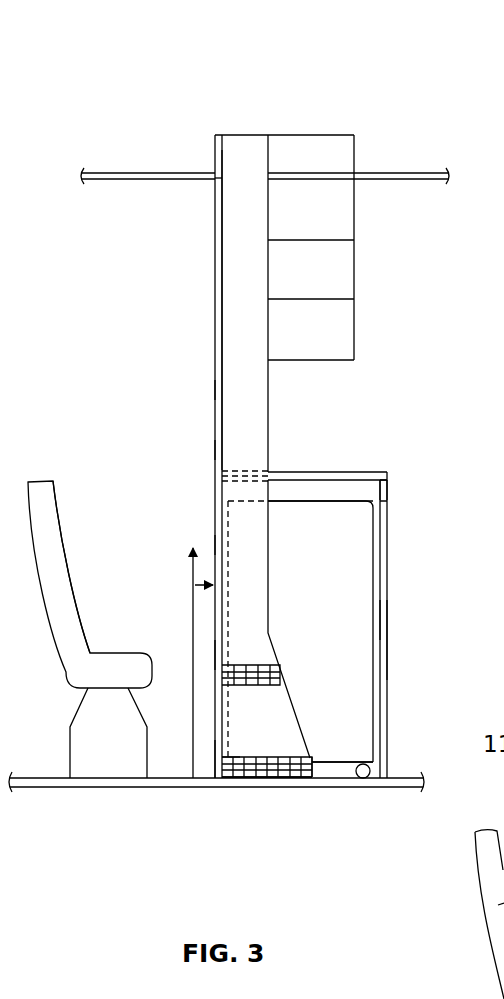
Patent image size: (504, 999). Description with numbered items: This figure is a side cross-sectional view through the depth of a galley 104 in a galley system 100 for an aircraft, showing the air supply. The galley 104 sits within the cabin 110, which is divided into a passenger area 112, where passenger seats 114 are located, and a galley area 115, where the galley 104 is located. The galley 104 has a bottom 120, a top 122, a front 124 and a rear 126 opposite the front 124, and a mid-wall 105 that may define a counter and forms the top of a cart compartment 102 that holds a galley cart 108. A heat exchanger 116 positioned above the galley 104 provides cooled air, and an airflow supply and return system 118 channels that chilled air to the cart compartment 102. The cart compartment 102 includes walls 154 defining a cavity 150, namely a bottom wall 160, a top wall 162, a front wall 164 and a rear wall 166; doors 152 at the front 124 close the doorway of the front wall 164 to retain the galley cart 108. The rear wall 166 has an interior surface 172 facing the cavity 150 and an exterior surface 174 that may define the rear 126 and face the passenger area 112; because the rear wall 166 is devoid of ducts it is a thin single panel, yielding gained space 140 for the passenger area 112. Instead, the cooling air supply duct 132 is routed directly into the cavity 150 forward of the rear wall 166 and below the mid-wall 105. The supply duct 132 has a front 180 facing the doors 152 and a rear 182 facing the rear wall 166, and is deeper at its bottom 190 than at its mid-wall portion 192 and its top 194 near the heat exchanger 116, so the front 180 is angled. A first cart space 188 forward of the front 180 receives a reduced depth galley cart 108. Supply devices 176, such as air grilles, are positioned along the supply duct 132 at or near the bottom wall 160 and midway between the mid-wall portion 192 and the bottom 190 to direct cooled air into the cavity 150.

The galley system 100 is at (157, 76).
The cabin 110 is at (122, 236).
The passenger area 112 is at (93, 452).
The passenger seats 114 is at (45, 558).
The heat exchanger 116 is at (319, 143).
The airflow supply and return system 118 is at (235, 312).
The bottom 120 is at (363, 789).
The top 122 is at (335, 172).
The front 124 is at (388, 478).
The rear 126 is at (218, 455).
The cooling air supply duct 132 is at (224, 393).
The gained space 140 is at (202, 583).
The cavity 150 is at (380, 654).
The doors 152 is at (382, 622).
The walls 154 is at (223, 752).
The bottom wall 160 is at (288, 782).
The top wall 162 is at (290, 478).
The front wall 164 is at (386, 500).
The rear wall 166 is at (212, 655).
The interior surface 172 is at (237, 775).
The exterior surface 174 is at (247, 757).
The supply device 176 is at (284, 675).
The front 180 is at (268, 563).
The rear 182 is at (217, 547).
The first cart space 188 is at (336, 770).
The bottom 190 is at (300, 782).
The mid-wall portion 192 is at (270, 470).
The top 194 is at (215, 185).
The cart compartment 102 is at (333, 492).
The galley 104 is at (384, 296).
The mid-wall 105 is at (310, 473).
The galley cart 108 is at (365, 545).
The galley area 115 is at (384, 386).